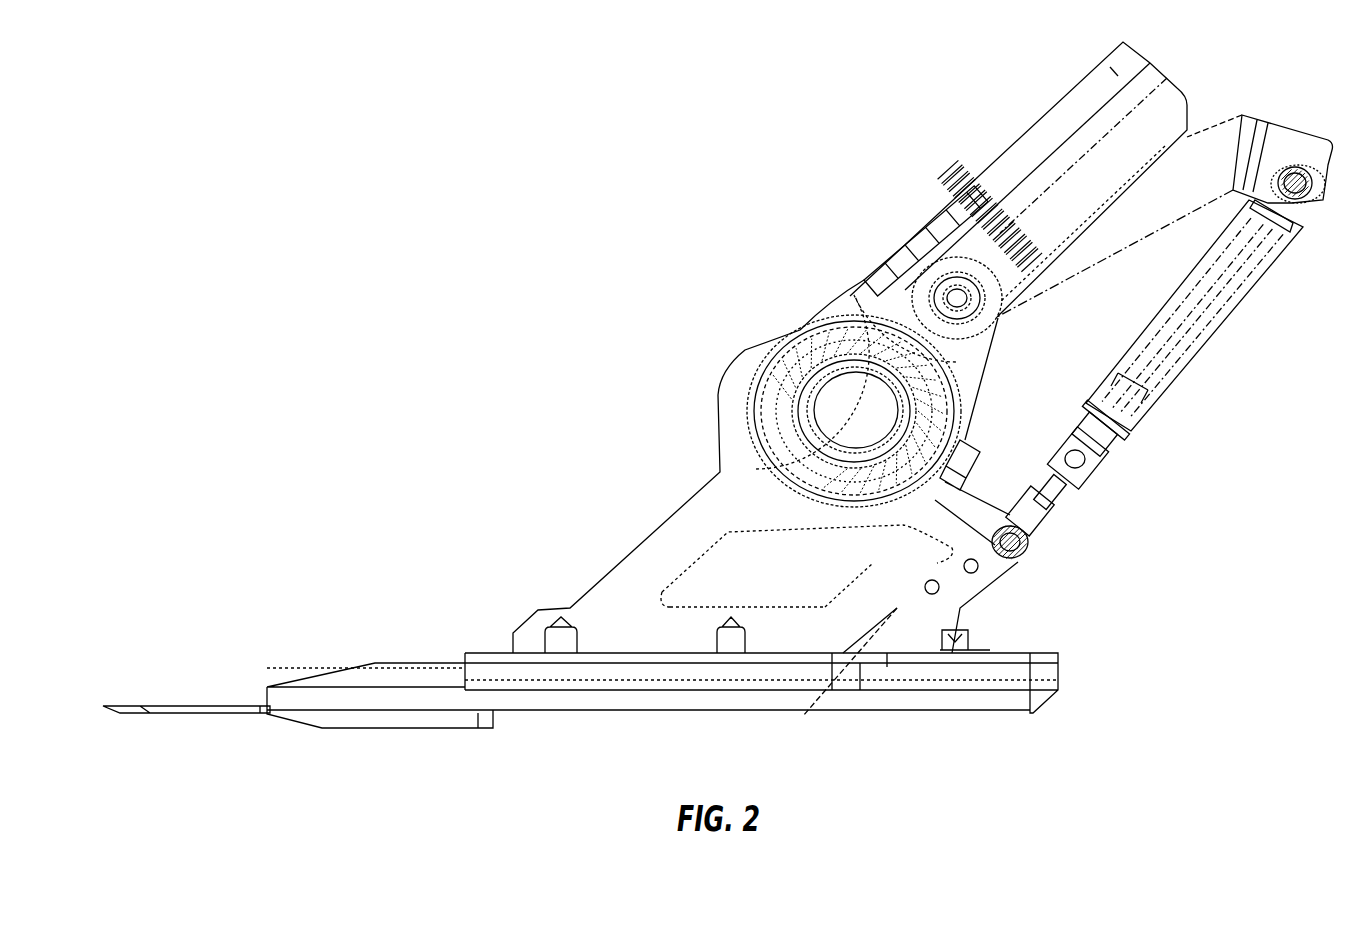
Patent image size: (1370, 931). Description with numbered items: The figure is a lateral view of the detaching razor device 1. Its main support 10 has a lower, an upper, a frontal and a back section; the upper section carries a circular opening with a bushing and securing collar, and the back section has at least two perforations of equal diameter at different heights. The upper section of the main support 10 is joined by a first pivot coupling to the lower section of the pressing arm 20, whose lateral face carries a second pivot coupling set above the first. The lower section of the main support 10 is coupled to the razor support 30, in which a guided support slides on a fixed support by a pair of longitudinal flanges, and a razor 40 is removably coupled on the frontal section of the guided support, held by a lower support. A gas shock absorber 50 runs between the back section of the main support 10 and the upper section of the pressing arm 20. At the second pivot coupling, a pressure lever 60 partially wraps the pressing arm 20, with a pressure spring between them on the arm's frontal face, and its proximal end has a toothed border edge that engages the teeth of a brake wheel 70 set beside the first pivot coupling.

The detaching razor device 1 is at (722, 230).
The main support 10 is at (682, 512).
The pressing arm 20 is at (1130, 238).
The razor support 30 is at (612, 725).
The razor 40 is at (170, 698).
The gas shock absorber 50 is at (1142, 415).
The pressure lever 60 is at (1000, 163).
The brake wheel 70 is at (790, 367).